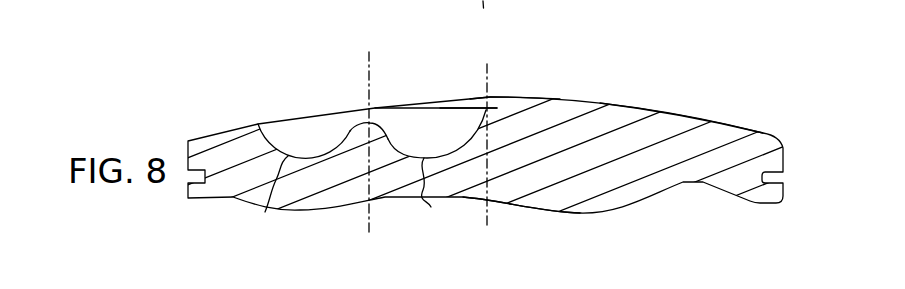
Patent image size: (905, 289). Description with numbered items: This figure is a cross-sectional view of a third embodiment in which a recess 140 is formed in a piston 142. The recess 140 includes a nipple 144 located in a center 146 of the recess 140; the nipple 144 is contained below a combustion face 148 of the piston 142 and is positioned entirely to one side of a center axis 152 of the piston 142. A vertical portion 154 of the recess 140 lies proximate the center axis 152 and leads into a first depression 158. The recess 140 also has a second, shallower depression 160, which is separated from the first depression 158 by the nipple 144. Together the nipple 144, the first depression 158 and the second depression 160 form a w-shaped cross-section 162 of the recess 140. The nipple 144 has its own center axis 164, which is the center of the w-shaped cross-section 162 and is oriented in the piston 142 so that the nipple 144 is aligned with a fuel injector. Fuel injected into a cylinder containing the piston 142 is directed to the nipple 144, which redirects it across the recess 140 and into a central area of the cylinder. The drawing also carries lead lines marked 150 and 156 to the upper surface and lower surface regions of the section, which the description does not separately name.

The recess 140 is at (341, 84).
The piston 142 is at (213, 78).
The nipple 144 is at (378, 110).
The center of recess 146 is at (368, 203).
The combustion face 148 is at (651, 105).
The upper surface line 150 is at (487, 98).
The center axis of piston 152 is at (487, 66).
The vertical portion 154 is at (496, 108).
The lower surface 156 is at (487, 216).
The first depression 158 is at (438, 195).
The second depression 160 is at (268, 210).
The w-shaped cross-section 162 is at (290, 100).
The center axis of nipple 164 is at (367, 52).